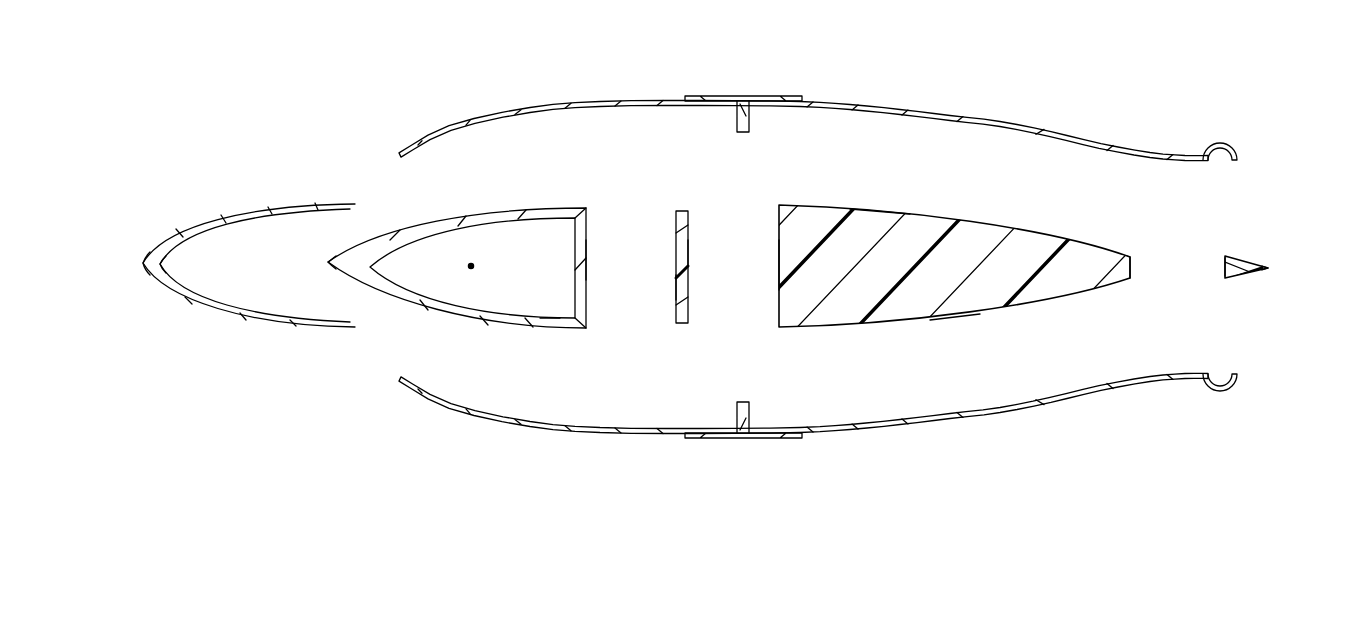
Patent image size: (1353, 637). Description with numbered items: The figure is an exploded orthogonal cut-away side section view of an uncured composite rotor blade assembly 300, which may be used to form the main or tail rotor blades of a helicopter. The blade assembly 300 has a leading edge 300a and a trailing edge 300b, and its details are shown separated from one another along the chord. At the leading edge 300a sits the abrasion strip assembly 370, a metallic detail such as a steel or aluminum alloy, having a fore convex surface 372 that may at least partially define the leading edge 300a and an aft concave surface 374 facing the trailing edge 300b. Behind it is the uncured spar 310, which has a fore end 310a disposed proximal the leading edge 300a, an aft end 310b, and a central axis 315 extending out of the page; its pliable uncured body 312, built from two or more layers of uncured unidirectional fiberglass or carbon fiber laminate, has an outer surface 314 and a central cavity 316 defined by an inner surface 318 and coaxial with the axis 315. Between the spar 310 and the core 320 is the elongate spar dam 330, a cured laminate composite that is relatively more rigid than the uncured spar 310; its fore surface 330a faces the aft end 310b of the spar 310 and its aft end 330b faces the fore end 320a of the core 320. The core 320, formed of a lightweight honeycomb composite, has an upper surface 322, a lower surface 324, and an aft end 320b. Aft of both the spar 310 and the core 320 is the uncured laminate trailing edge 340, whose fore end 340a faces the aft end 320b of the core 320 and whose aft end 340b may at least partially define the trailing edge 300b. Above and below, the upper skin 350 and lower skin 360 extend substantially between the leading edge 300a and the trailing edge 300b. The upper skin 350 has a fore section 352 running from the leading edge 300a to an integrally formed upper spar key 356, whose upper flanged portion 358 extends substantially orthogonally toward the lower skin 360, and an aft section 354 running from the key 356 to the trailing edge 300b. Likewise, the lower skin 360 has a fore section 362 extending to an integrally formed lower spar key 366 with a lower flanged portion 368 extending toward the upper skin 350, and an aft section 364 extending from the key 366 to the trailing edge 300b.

The rotor blade assembly 300 is at (346, 105).
The leading edge 300a is at (142, 263).
The trailing edge 300b is at (1275, 299).
The spar 310 is at (454, 267).
The fore end 310a is at (327, 265).
The aft end 310b is at (590, 250).
The body 312 is at (440, 214).
The outer surface 314 is at (437, 324).
The central axis 315 is at (477, 265).
The central cavity 316 is at (404, 278).
The inner surface 318 is at (550, 318).
The core 320 is at (940, 262).
The fore end 320a is at (778, 266).
The aft end 320b is at (1133, 262).
The upper surface 322 is at (880, 205).
The lower surface 324 is at (955, 322).
The spar dam 330 is at (681, 241).
The fore surface 330a is at (674, 284).
The aft end 330b is at (692, 250).
The trailing edge 340 is at (1237, 294).
The fore end 340a is at (1224, 271).
The aft end 340b is at (1268, 268).
The upper skin 350 is at (818, 105).
The fore section 352 is at (541, 108).
The aft section 354 is at (932, 108).
The upper spar key 356 is at (745, 96).
The upper flanged portion 358 is at (737, 120).
The lower skin 360 is at (818, 426).
The fore section 362 is at (541, 428).
The aft section 364 is at (932, 425).
The lower spar key 366 is at (745, 439).
The lower flanged portion 368 is at (737, 414).
The abrasion strip assembly 370 is at (210, 270).
The fore convex surface 372 is at (237, 323).
The aft concave surface 374 is at (165, 258).